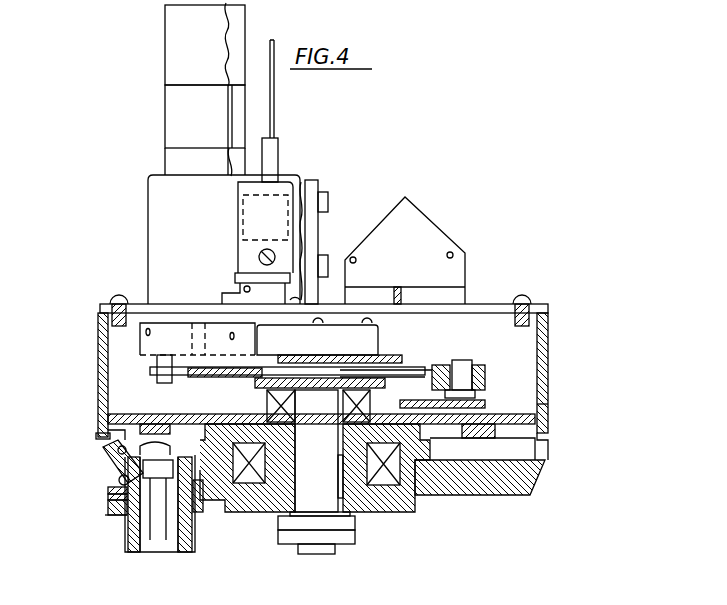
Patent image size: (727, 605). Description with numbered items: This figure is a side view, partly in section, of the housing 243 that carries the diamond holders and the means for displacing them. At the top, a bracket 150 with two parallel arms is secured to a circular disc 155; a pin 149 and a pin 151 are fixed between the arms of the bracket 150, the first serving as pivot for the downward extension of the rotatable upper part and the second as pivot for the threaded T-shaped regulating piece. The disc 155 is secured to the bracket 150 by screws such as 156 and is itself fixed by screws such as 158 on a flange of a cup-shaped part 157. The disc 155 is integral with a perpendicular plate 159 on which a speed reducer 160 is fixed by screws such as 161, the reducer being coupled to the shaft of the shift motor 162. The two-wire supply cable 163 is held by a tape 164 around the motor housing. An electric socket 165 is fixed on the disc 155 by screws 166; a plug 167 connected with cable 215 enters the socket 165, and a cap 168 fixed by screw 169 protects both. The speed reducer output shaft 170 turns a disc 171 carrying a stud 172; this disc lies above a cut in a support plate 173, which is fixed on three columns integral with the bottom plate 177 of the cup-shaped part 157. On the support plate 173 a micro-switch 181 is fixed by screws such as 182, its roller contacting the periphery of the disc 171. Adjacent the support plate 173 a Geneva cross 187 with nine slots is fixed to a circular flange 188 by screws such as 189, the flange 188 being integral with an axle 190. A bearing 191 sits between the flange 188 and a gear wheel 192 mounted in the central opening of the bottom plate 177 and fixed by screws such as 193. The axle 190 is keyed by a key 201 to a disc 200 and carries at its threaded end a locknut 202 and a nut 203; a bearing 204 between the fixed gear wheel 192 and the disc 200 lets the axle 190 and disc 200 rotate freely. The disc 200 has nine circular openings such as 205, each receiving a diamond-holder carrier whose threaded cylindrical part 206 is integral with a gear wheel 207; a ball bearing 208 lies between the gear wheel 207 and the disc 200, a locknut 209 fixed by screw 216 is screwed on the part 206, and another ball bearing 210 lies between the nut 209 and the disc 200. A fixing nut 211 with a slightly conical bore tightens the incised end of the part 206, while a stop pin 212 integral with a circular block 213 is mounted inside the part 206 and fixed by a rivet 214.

The pin 149 is at (355, 257).
The bracket 150 is at (440, 236).
The pin 151 is at (452, 252).
The circular disc 155 is at (490, 304).
The screw 156 is at (402, 296).
The cup-shaped part 157 is at (546, 340).
The screw 158 is at (528, 300).
The perpendicular plate 159 is at (318, 167).
The speed reducer 160 is at (148, 168).
The screw 161 is at (322, 192).
The shift motor 162 is at (164, 44).
The supply cable 163 is at (231, 44).
The tape 164 is at (165, 120).
The electric socket 165 is at (246, 281).
The screw 166 is at (244, 290).
The plug 167 is at (258, 216).
The cap 168 is at (240, 233).
The screw 169 is at (260, 257).
The speed reducer output shaft 170 is at (200, 316).
The disc 171 is at (152, 352).
The stud 172 is at (160, 372).
The support plate 173 is at (398, 358).
The bottom plate 177 is at (487, 419).
The micro-switch 181 is at (368, 352).
The screw 182 is at (318, 324).
The Geneva cross 187 is at (440, 368).
The circular flange 188 is at (300, 386).
The screw 189 is at (275, 374).
The axle 190 is at (303, 500).
The bearing 191 is at (370, 404).
The gear wheel 192 is at (425, 437).
The screw 193 is at (150, 414).
The disc 200 is at (532, 487).
The key 201 is at (334, 487).
The locknut 202 is at (352, 523).
The nut 203 is at (352, 537).
The bearing 204 is at (405, 502).
The circular opening 205 is at (110, 490).
The threaded cylindrical part 206 is at (126, 520).
The gear wheel 207 is at (112, 444).
The ball bearing 208 is at (120, 460).
The locknut 209 is at (203, 514).
The ball bearing 210 is at (115, 498).
The fixing nut 211 is at (190, 554).
The stop pin 212 is at (168, 482).
The circular block 213 is at (153, 482).
The rivet 214 is at (100, 436).
The cable 215 is at (275, 106).
The screw 216 is at (110, 510).
The housing 243 is at (552, 407).